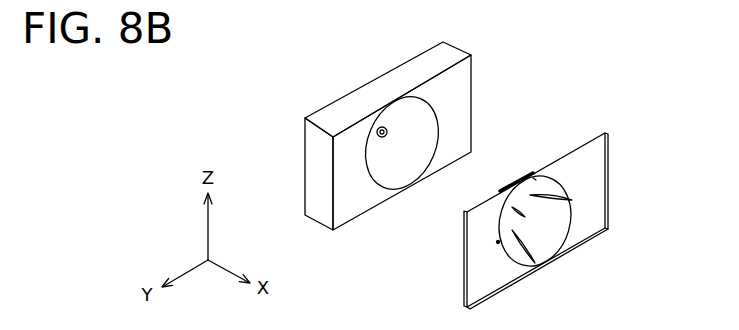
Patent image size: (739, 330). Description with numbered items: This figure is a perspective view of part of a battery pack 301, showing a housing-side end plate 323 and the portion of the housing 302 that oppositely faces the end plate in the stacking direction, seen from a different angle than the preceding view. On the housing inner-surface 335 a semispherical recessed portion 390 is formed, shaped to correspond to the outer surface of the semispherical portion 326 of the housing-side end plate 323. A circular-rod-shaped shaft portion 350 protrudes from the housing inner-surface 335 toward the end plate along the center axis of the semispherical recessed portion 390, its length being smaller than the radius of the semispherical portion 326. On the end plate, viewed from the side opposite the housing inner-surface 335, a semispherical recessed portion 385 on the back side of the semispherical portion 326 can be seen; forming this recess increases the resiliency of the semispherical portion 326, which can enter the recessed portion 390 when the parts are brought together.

The battery pack 301 is at (540, 62).
The housing 302 is at (348, 145).
The housing inner-surface 335 is at (460, 103).
The semispherical recessed portion 390 is at (405, 168).
The shaft portion 350 is at (384, 137).
The housing-side end plate 323 is at (595, 172).
The semispherical portion 326 is at (510, 182).
The semispherical recessed portion 385 is at (540, 228).